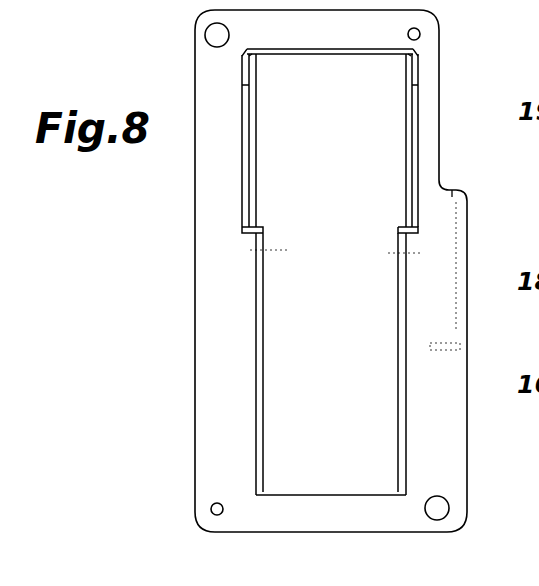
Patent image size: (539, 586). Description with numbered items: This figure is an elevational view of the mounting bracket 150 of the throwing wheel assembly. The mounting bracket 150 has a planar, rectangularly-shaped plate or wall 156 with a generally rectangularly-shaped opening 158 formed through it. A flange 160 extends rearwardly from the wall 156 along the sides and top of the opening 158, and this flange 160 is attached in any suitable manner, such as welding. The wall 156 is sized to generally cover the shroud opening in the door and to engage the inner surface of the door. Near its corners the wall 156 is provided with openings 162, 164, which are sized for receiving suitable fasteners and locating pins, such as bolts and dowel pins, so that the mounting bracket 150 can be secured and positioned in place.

The mounting bracket 150 is at (135, 258).
The plate or wall 156 is at (195, 463).
The opening 158 is at (315, 495).
The flange 160 is at (256, 340).
The openings 162 is at (205, 33).
The openings 164 is at (420, 33).